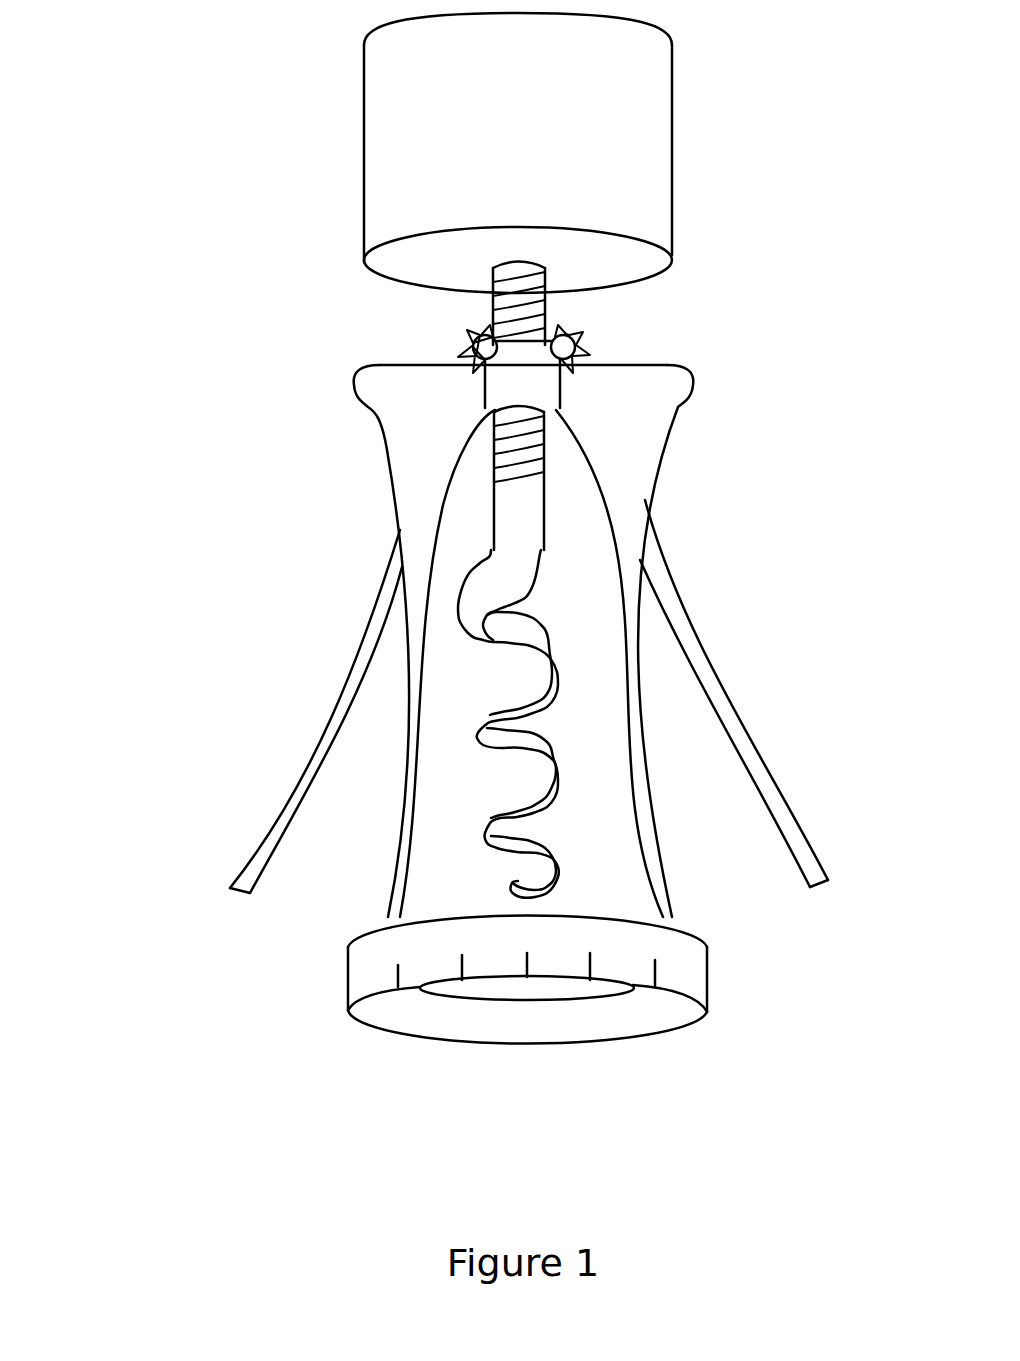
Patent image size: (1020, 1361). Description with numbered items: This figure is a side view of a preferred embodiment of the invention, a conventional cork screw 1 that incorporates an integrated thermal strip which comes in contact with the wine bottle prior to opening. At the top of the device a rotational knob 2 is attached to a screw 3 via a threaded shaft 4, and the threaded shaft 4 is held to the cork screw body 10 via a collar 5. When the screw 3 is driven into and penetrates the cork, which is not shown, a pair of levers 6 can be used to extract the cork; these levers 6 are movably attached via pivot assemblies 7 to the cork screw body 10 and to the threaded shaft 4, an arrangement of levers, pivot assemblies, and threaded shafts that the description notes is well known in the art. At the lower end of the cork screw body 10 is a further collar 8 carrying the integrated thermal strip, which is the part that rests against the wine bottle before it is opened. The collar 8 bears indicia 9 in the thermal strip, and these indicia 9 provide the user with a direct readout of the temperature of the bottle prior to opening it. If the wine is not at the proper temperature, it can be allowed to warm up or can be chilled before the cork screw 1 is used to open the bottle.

The cork screw 1 is at (172, 163).
The rotational knob 2 is at (633, 134).
The screw 3 is at (480, 747).
The threaded shaft 4 is at (537, 307).
The collar 5 is at (500, 385).
The levers 6 is at (345, 692).
The pivot assemblies 7 is at (467, 340).
The collar 8 is at (692, 980).
The indicia 9 is at (380, 954).
The cork screw body 10 is at (407, 780).